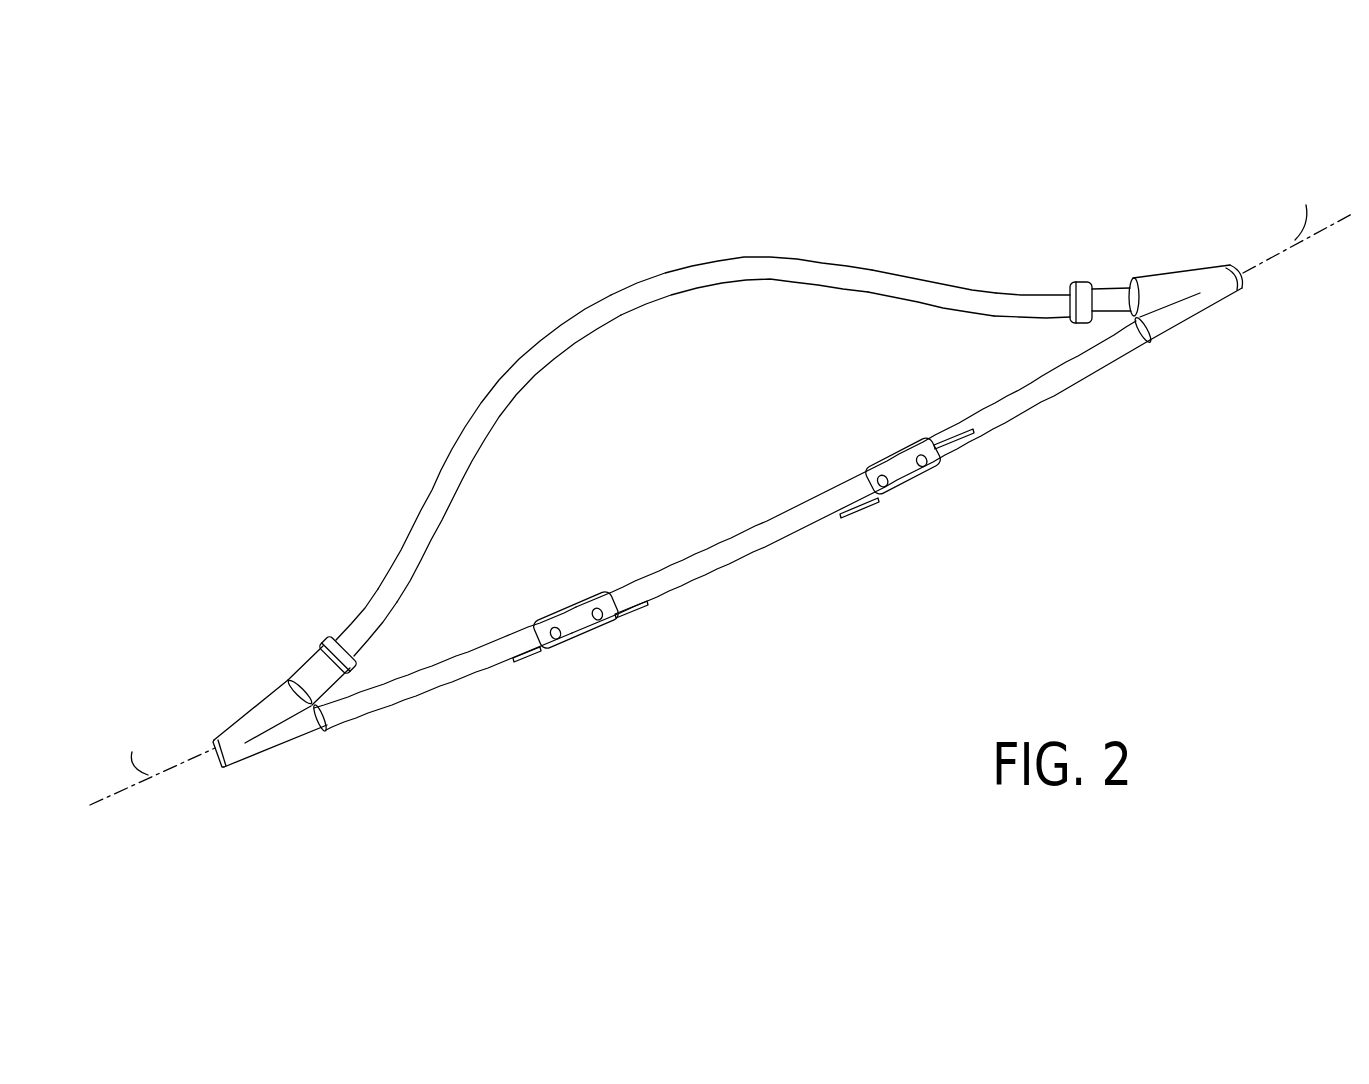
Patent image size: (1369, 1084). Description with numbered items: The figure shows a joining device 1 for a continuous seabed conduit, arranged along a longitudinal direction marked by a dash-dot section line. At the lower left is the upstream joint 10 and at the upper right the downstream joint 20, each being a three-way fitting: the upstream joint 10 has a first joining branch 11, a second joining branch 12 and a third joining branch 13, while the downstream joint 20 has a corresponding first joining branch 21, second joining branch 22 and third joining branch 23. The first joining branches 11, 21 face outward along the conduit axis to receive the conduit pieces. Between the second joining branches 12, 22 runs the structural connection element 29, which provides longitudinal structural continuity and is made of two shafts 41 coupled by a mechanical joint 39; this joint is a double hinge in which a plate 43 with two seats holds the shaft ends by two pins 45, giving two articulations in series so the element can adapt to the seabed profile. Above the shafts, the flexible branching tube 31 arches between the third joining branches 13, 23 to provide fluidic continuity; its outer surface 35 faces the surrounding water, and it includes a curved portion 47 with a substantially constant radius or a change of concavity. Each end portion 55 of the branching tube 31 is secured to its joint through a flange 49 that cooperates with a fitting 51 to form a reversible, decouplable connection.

The joining device 1 is at (310, 442).
The upstream joint 10 is at (272, 752).
The first joining branch 11 is at (225, 764).
The second joining branch 12 is at (302, 737).
The third joining branch 13 is at (272, 703).
The downstream joint 20 is at (1175, 318).
The first joining branch 21 is at (1232, 285).
The second joining branch 22 is at (1153, 333).
The third joining branch 23 is at (1152, 290).
The structural connection element 29 is at (460, 678).
The branching tube 31 is at (550, 338).
The outer surface 35 is at (708, 268).
The mechanical joint 39 is at (875, 446).
The shaft 41 is at (733, 557).
The plate 43 is at (888, 488).
The pin 45 is at (935, 461).
The curved portion 47 is at (918, 288).
The flange 49 is at (335, 632).
The fitting 51 is at (302, 665).
The end portion 55 is at (372, 602).